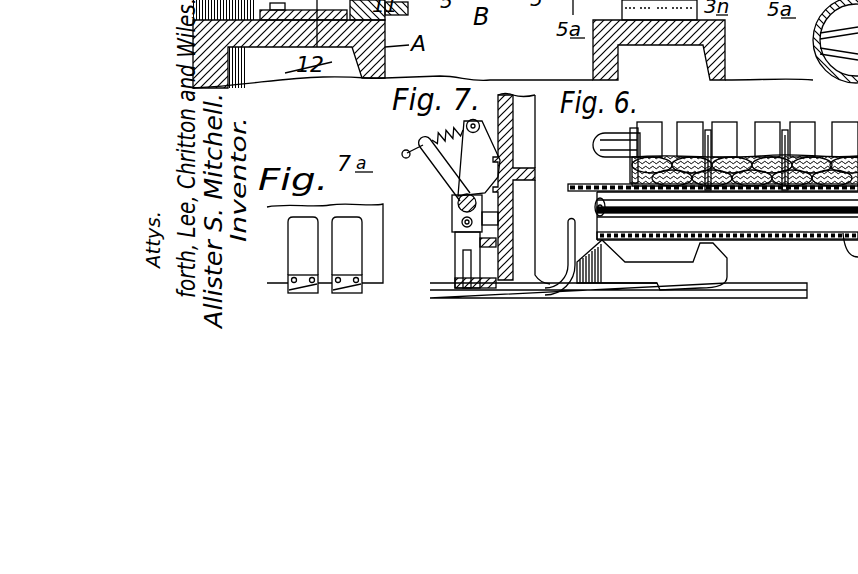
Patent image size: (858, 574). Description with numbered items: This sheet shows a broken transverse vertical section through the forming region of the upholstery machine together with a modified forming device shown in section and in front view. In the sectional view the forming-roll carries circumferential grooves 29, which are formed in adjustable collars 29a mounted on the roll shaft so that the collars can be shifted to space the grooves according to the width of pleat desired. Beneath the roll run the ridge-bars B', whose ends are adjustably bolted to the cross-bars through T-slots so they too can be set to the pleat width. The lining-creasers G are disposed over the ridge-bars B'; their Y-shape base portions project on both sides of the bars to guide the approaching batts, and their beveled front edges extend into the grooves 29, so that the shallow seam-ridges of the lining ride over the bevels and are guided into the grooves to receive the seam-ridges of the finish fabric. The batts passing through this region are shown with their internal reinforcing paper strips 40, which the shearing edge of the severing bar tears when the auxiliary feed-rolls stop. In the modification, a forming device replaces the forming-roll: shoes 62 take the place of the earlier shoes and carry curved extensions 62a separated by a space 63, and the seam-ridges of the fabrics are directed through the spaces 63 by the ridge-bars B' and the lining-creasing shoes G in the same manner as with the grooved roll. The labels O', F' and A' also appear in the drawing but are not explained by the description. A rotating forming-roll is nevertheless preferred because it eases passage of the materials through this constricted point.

In FIG. 6, the adjustable collars 29a is at (655, 132).
In FIG. 6, the circumferential grooves 29 is at (708, 128).
In FIG. 6, the roller O' is at (596, 155).
In FIG. 6, the reinforcing paper strips 40 is at (632, 177).
In FIG. 6, the ridge-bars B' is at (644, 256).
In FIG. 6, the lining-creasers G is at (637, 267).
In FIG. 7, the curved extensions 62a is at (575, 252).
In FIG. 7A, the feed plate F' is at (376, 238).
In FIG. 7, the feed plate F' is at (524, 189).
In FIG. 7A, the shoes 62 is at (298, 291).
In FIG. 7A, the space 63 is at (323, 228).
In FIG. 7A, the plate A' is at (346, 243).